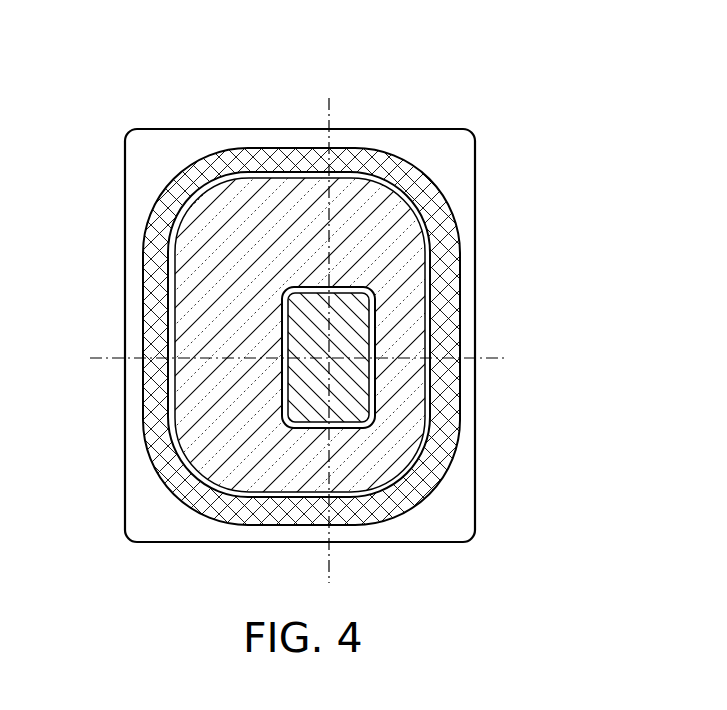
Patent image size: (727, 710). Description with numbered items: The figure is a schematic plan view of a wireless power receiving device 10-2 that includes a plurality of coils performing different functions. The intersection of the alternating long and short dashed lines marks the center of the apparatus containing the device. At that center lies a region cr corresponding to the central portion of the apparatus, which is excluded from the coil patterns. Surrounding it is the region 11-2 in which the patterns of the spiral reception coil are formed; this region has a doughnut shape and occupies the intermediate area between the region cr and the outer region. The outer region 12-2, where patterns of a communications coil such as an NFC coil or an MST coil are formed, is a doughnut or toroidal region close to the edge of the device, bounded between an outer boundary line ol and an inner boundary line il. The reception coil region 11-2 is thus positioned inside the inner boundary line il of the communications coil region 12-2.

The wireless power receiving device 10-2 is at (353, 58).
The region in which patterns of a communications coil are formed 12-2 is at (363, 355).
The region in which patterns of a reception coil are formed 11-2 is at (363, 355).
The region corresponding to a central portion of the apparatus cr is at (350, 385).
The outer boundary line ol is at (147, 272).
The inner boundary line il is at (145, 318).